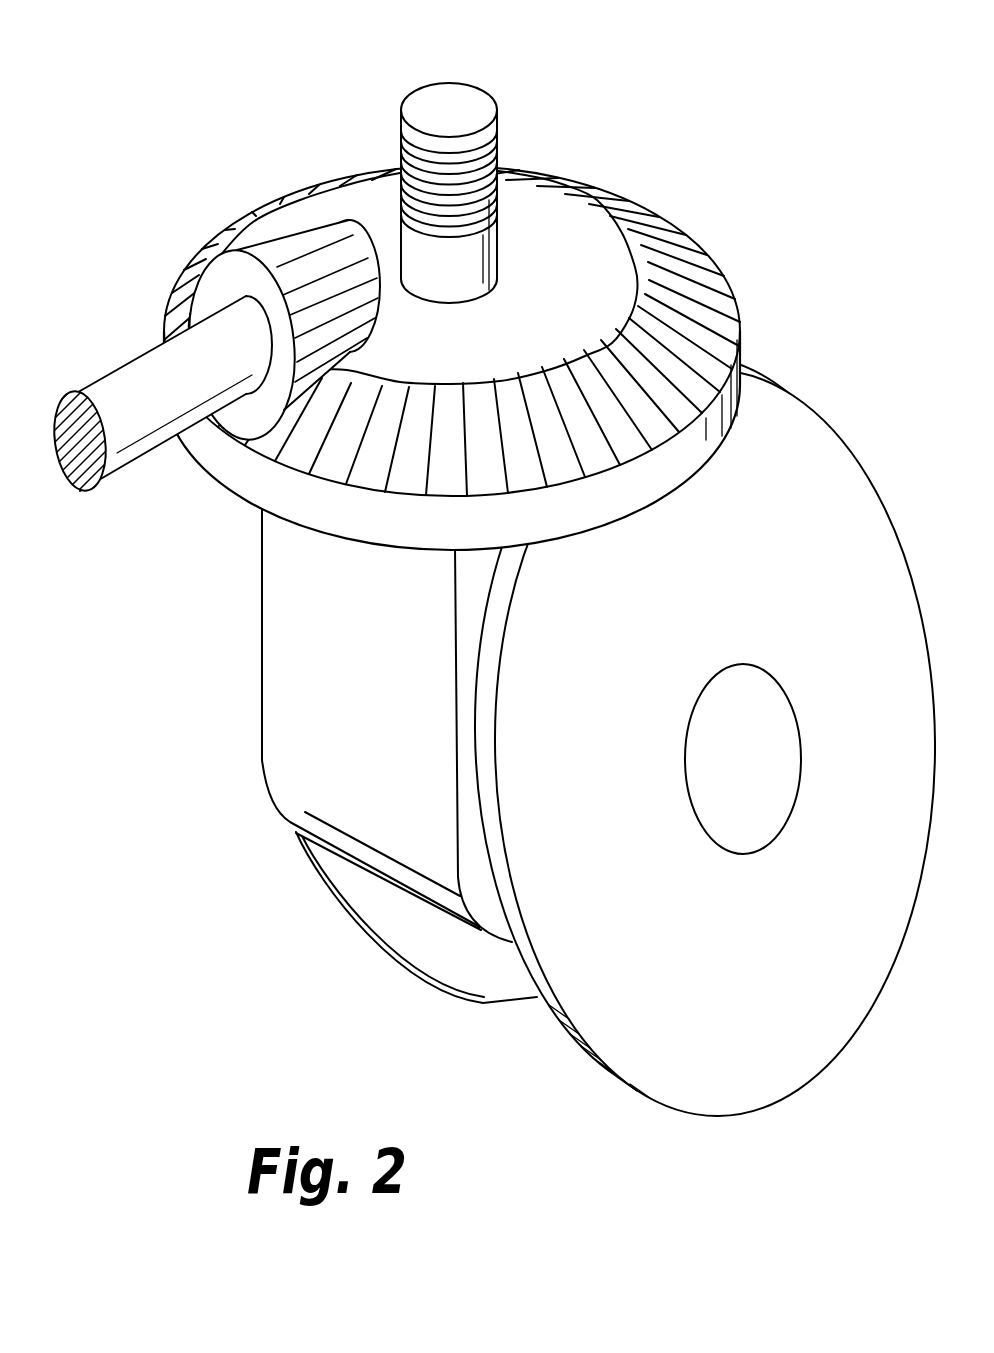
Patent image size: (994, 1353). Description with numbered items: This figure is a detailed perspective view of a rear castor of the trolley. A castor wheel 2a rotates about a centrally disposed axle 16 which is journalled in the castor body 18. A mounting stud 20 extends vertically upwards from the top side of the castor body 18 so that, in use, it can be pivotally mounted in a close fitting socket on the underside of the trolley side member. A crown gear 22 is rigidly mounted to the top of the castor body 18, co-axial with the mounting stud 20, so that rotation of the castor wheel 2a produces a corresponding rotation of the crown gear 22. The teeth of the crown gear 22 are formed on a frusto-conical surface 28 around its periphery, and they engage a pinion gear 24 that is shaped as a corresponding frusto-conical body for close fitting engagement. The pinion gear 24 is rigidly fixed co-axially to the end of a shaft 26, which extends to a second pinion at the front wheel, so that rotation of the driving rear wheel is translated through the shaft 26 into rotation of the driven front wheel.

The castor wheel 2a is at (660, 1043).
The axle 16 is at (740, 772).
The castor body 18 is at (320, 645).
The mounting stud 20 is at (467, 97).
The crown gear 22 is at (587, 227).
The pinion gear 24 is at (332, 253).
The shaft 26 is at (197, 348).
The frusto-conical surface 28 is at (707, 303).